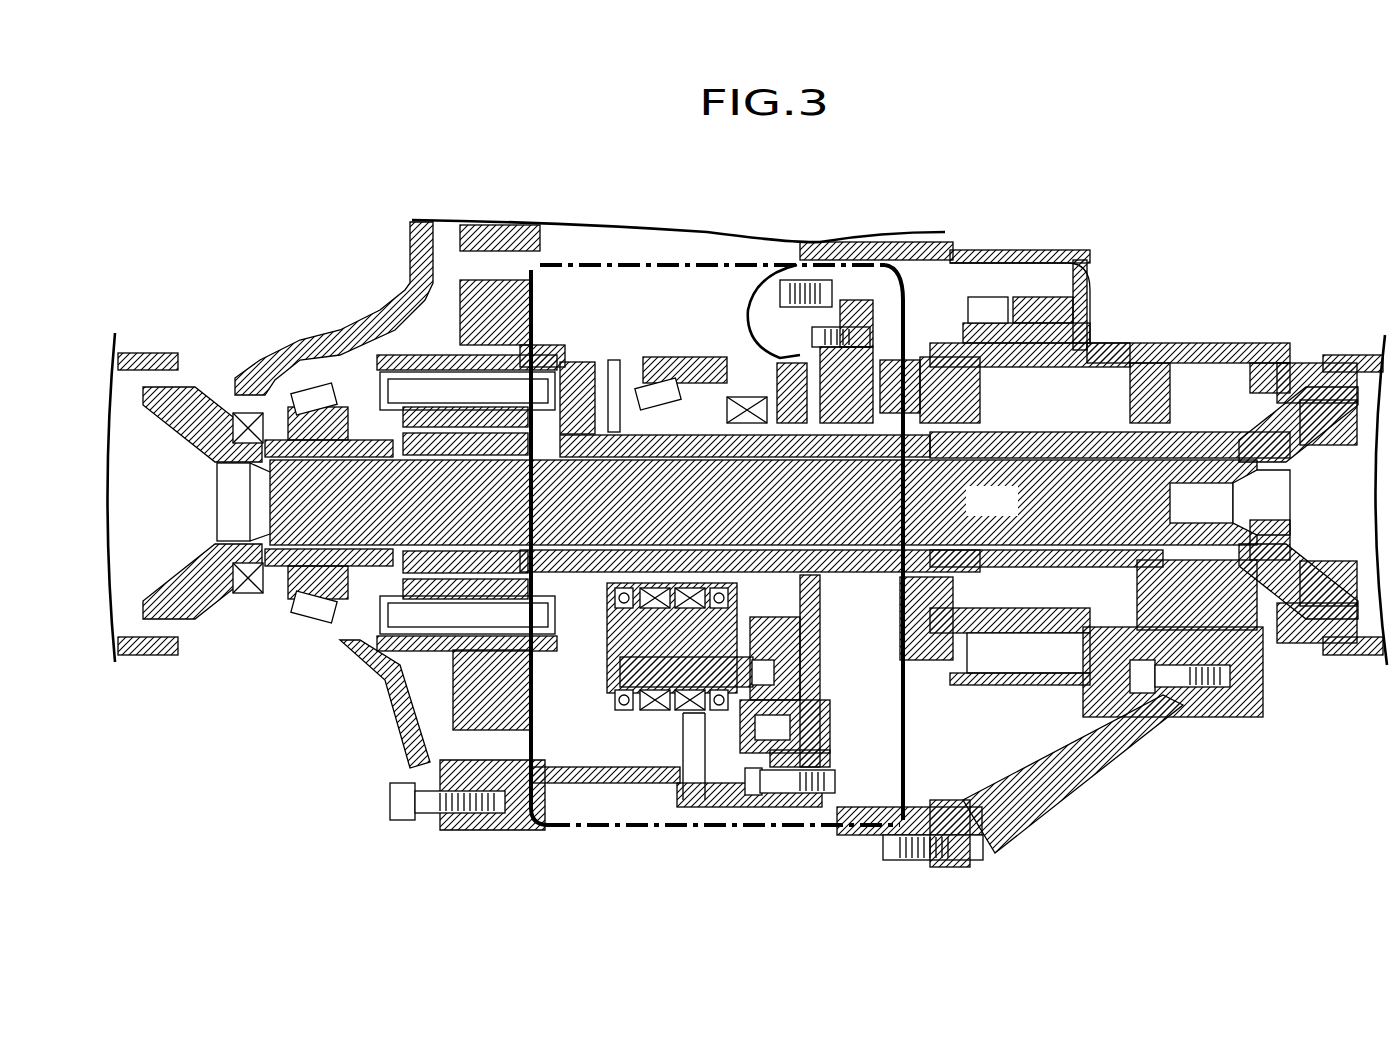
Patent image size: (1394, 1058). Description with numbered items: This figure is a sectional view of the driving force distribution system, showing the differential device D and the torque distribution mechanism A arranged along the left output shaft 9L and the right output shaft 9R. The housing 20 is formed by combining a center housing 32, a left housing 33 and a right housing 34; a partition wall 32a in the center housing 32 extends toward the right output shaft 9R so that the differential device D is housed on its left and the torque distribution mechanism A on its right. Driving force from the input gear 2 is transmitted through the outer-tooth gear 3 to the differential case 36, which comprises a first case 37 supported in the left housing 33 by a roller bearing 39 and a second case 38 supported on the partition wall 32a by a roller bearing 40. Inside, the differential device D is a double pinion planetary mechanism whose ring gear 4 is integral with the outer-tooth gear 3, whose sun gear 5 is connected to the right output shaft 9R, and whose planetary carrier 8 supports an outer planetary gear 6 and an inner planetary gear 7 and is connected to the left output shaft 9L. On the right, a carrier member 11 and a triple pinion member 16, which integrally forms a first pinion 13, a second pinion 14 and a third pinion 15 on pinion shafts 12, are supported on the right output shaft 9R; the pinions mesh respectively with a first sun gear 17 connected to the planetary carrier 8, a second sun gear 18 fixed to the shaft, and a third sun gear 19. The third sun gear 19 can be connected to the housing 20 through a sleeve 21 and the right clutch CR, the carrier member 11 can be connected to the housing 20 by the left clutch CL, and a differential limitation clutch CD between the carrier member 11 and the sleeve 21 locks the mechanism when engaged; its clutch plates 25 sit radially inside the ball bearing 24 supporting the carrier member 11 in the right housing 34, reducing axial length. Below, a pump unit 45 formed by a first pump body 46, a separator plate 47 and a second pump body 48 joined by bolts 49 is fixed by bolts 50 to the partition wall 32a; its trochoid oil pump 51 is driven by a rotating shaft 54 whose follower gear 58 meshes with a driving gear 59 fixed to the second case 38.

The input gear 2 is at (527, 217).
The outer-tooth gear 3 is at (453, 262).
The ring gear 4 is at (467, 647).
The sun gear 5 is at (467, 433).
The outer planetary gear 6 is at (417, 357).
The inner planetary gear 7 is at (400, 647).
The planetary carrier 8 is at (329, 503).
The left output shaft 9L is at (737, 502).
The right output shaft 9R is at (970, 517).
The carrier member 11 is at (1097, 332).
The pinion shafts 12 is at (1128, 365).
The first pinion 13 is at (990, 313).
The second pinion 14 is at (1030, 307).
The third pinion 15 is at (1087, 277).
The triple pinion member 16 is at (980, 290).
The first sun gear 17 is at (983, 607).
The second sun gear 18 is at (1030, 600).
The third sun gear 19 is at (1063, 583).
The housing 20 is at (910, 222).
The sleeve 21 is at (1077, 440).
The ball bearing 24 is at (1092, 697).
The clutch plates 25 is at (1112, 603).
The center housing 32 is at (880, 230).
The partition wall 32a is at (697, 357).
The left housing 33 is at (333, 363).
The right housing 34 is at (1197, 343).
The differential case 36 is at (377, 663).
The first case 37 is at (353, 643).
The second case 38 is at (610, 420).
The roller bearing 39 is at (290, 362).
The roller bearing 40 is at (663, 433).
The pump unit 45 is at (700, 792).
The first pump body 46 is at (787, 797).
The separator plate 47 is at (826, 763).
The second pump body 48 is at (830, 730).
The bolts 49 is at (857, 318).
The bolts 50 is at (773, 391).
The trochoid oil pump 51 is at (812, 693).
The rotating shaft 54 is at (660, 695).
The follower gear 58 is at (620, 713).
The driving gear 59 is at (613, 358).
The torque distribution mechanism A is at (993, 273).
The differential device D is at (447, 320).
The left clutch CL is at (923, 330).
The differential limitation clutch CD is at (1127, 363).
The right clutch CR is at (1230, 363).